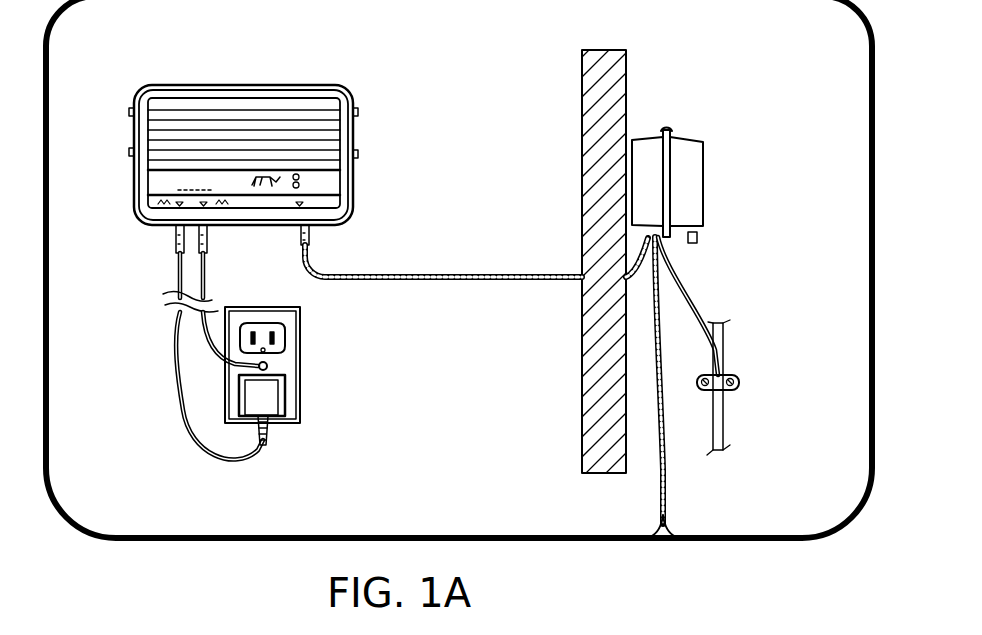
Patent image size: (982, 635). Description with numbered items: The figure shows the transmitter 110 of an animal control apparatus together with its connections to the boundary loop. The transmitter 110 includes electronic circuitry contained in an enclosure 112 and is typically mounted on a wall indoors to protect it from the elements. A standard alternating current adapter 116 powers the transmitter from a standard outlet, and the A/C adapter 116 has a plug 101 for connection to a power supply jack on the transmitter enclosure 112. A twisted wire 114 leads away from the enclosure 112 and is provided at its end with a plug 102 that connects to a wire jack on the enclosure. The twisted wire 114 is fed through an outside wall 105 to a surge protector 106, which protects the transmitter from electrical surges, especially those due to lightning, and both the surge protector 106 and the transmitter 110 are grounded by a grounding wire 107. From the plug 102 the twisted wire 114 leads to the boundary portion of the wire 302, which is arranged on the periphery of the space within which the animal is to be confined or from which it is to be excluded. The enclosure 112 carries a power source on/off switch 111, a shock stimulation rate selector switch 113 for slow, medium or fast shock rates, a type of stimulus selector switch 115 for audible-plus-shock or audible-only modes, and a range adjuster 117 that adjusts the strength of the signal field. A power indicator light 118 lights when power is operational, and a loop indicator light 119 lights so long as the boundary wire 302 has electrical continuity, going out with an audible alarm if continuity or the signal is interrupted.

The plug 101 is at (171, 326).
The plug 102 is at (312, 242).
The outside wall 105 is at (627, 84).
The surge protector 106 is at (704, 168).
The grounding wire 107 is at (206, 276).
The transmitter 110 is at (228, 76).
The power source on/off switch 111 is at (129, 152).
The enclosure 112 is at (355, 146).
The shock stimulation rate selector switch 113 is at (129, 112).
The twisted wire 114 is at (473, 282).
The type of stimulus selector switch 115 is at (358, 112).
The alternating current adapter 116 is at (279, 400).
The range adjuster 117 is at (358, 155).
The power indicator light 118 is at (336, 178).
The loop indicator light 119 is at (334, 187).
The boundary portion of the wire 302 is at (600, 544).